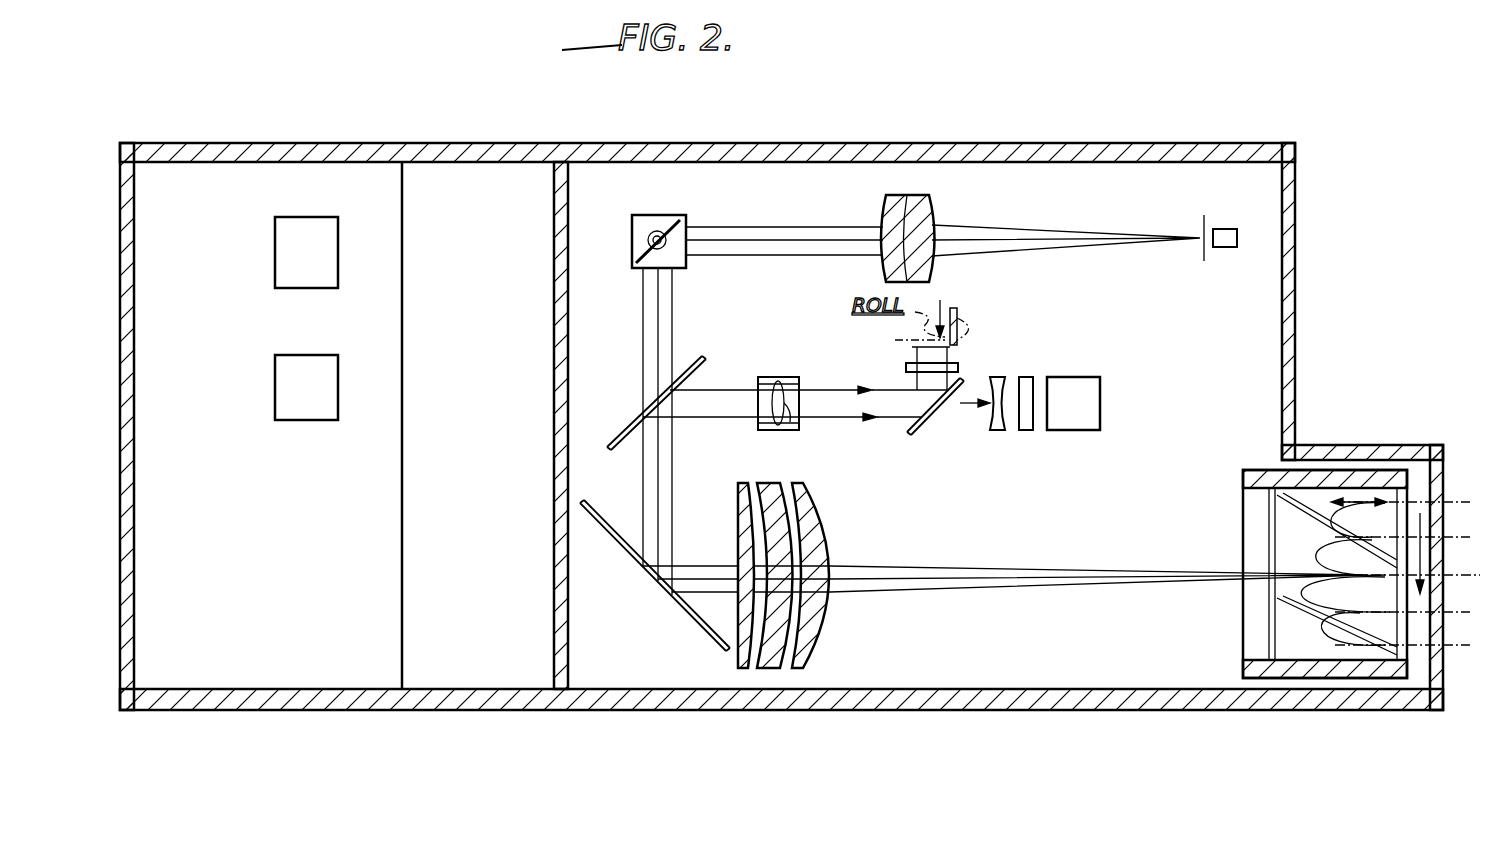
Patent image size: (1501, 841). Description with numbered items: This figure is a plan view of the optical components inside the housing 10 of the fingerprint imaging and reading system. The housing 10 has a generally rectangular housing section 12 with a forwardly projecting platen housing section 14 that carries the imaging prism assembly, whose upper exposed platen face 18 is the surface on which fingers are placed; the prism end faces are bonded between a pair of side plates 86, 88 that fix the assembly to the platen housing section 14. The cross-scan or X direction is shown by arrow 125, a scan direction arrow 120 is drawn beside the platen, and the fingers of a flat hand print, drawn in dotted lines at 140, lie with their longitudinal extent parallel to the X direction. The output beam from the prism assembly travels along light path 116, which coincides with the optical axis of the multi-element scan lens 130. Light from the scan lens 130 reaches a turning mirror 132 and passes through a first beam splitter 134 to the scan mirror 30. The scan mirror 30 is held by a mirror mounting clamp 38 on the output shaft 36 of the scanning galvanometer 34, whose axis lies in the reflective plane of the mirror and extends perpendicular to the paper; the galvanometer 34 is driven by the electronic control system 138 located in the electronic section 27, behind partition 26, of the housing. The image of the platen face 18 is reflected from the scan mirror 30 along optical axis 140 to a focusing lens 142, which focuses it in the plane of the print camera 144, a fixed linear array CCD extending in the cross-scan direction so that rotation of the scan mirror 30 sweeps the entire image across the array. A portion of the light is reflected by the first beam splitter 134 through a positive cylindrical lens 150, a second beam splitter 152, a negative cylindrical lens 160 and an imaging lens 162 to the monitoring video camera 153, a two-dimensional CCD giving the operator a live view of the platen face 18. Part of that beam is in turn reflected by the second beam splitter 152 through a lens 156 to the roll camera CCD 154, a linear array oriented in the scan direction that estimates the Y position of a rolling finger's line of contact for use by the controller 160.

The housing 10 is at (1010, 118).
The rectangular housing section 12 is at (866, 143).
The platen housing section 14 is at (1356, 450).
The platen face 18 is at (1300, 490).
The partition wall 26 is at (554, 249).
The electronic section 27 is at (320, 135).
The scan mirror 30 is at (682, 222).
The scanning galvanometer 34 is at (650, 215).
The output shaft 36 is at (648, 242).
The mirror mounting clamp 38 is at (650, 236).
The side plate 86 is at (1305, 678).
The side plate 88 is at (1262, 478).
The light path 116 is at (976, 575).
The scan direction arrow 120 is at (1436, 545).
The X direction arrow 125 is at (1345, 500).
The scan lens 130 is at (838, 522).
The turning mirror 132 is at (690, 606).
The first beam splitter 134 is at (612, 445).
The electronic control system 138 is at (288, 289).
The optical axis 140 is at (771, 242).
The focusing lens 142 is at (934, 210).
The print camera 144 is at (1222, 229).
The positive cylindrical lens 150 is at (778, 431).
The second beam splitter 152 is at (925, 431).
The monitoring video camera 153 is at (1100, 395).
The roll camera CCD 154 is at (957, 310).
The lens 156 is at (958, 370).
The negative cylindrical lens 160 is at (288, 421).
The imaging lens 162 is at (1026, 431).